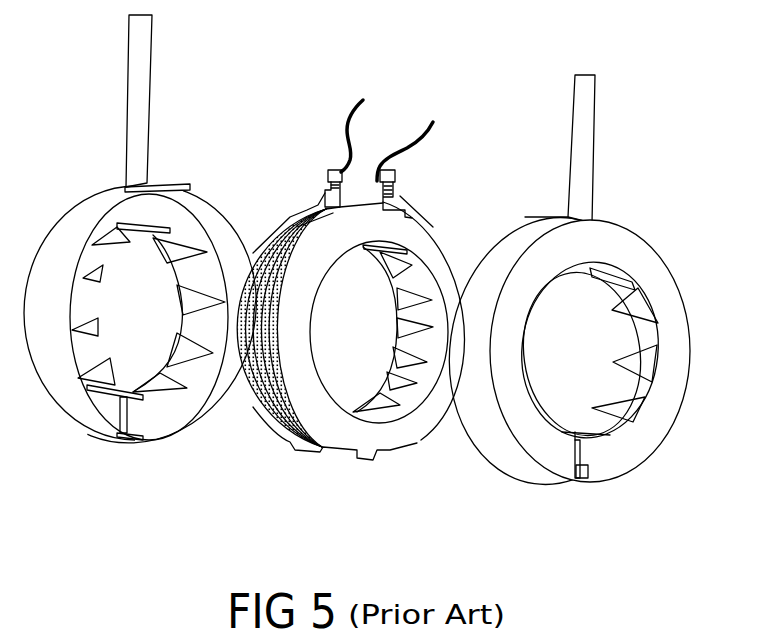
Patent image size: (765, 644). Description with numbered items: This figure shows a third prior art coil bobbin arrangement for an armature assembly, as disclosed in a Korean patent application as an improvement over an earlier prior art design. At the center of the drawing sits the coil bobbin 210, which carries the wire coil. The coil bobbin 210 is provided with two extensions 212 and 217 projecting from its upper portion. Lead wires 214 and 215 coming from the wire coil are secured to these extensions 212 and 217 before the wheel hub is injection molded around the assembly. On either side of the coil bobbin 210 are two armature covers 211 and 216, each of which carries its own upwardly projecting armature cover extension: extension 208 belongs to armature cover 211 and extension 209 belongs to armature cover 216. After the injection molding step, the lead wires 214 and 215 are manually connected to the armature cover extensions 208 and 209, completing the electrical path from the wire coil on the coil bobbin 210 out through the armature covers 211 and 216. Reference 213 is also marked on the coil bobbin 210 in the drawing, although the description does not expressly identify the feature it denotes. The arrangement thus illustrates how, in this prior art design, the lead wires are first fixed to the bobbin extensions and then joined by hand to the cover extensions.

The armature cover extension 208 is at (152, 87).
The armature cover extension 209 is at (597, 163).
The coil bobbin 210 is at (410, 443).
The armature cover 211 is at (223, 200).
The extension 212 is at (395, 168).
The bobbin flange 213 is at (395, 190).
The lead wire 214 is at (345, 95).
The lead wire 215 is at (417, 140).
The armature cover 216 is at (503, 482).
The extension 217 is at (335, 169).